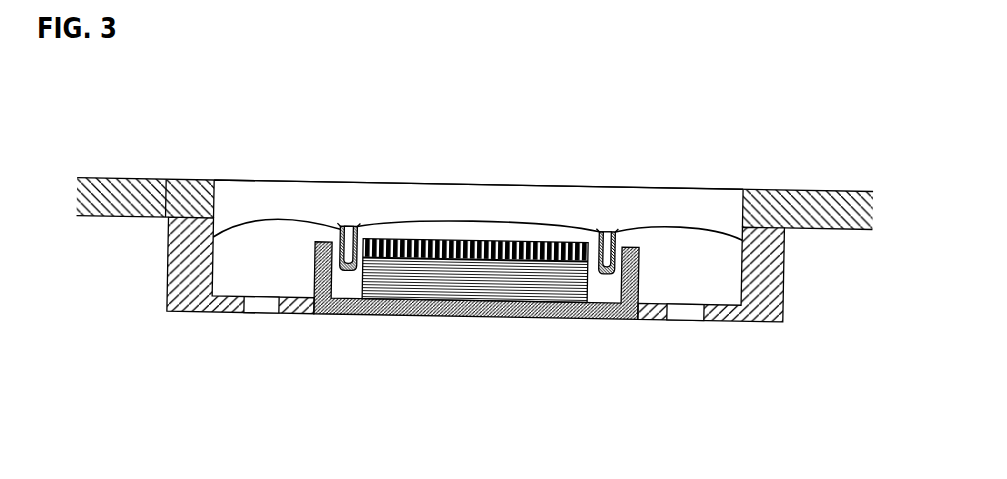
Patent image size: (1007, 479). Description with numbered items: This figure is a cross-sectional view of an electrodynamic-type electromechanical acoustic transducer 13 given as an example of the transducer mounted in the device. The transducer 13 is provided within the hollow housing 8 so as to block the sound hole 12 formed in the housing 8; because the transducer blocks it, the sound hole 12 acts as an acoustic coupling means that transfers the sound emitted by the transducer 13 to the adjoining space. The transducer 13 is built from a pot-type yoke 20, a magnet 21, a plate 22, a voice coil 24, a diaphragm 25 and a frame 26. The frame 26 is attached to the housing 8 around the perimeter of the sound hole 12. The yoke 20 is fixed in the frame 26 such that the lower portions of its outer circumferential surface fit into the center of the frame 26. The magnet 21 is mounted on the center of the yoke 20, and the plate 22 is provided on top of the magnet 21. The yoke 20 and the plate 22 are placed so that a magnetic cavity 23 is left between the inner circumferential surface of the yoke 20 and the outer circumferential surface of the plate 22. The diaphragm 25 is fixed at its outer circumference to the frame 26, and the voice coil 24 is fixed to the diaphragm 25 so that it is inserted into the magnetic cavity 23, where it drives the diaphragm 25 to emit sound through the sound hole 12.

The housing 8 is at (164, 178).
The sound hole 12 is at (256, 187).
The electromechanical acoustic transducer 13 is at (795, 317).
The pot-type yoke 20 is at (562, 317).
The magnet 21 is at (463, 294).
The plate 22 is at (440, 242).
The magnetic cavity 23 is at (621, 232).
The voice coil 24 is at (348, 226).
The diaphragm 25 is at (678, 225).
The frame 26 is at (186, 313).